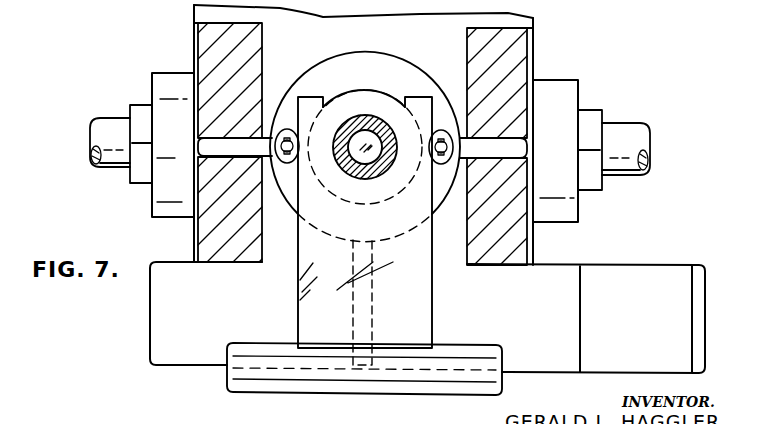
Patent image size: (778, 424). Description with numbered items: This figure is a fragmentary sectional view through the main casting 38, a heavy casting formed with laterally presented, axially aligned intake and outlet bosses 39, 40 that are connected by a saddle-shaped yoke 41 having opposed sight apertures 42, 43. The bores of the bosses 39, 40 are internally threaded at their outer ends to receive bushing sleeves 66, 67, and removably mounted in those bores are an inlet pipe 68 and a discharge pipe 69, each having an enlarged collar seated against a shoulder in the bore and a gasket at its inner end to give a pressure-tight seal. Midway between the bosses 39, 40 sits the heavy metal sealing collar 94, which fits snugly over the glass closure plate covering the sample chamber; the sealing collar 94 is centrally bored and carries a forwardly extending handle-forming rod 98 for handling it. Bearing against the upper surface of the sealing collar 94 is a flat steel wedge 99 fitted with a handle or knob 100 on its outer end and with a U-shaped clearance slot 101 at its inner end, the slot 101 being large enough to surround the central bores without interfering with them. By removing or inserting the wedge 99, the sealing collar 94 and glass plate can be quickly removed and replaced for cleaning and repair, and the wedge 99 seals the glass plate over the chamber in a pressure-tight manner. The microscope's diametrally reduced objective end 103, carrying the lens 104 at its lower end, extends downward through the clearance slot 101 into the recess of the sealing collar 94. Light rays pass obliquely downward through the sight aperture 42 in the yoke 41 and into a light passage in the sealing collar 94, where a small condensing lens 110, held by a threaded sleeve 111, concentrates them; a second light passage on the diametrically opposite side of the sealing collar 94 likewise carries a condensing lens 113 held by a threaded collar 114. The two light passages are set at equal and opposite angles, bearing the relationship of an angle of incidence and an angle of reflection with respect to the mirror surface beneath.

The main casting 38 is at (345, 21).
The intake boss 39 is at (172, 133).
The outlet boss 40 is at (566, 141).
The saddle-shaped yoke 41 is at (244, 142).
The sight aperture 42 is at (240, 115).
The sight aperture 43 is at (485, 182).
The bushing sleeve 66 is at (136, 161).
The bushing sleeve 67 is at (604, 142).
The inlet pipe 68 is at (109, 157).
The discharge pipe 69 is at (639, 149).
The sealing collar 94 is at (365, 119).
The handle-forming rod 98 is at (381, 302).
The wedge 99 is at (350, 222).
The handle or knob 100 is at (364, 381).
The U-shaped clearance slot 101 is at (377, 75).
The objective end 103 is at (365, 125).
The lens 104 is at (365, 128).
The condensing lens 110 is at (363, 152).
The threaded sleeve 111 is at (282, 182).
The condensing lens 113 is at (445, 115).
The threaded collar 114 is at (365, 219).